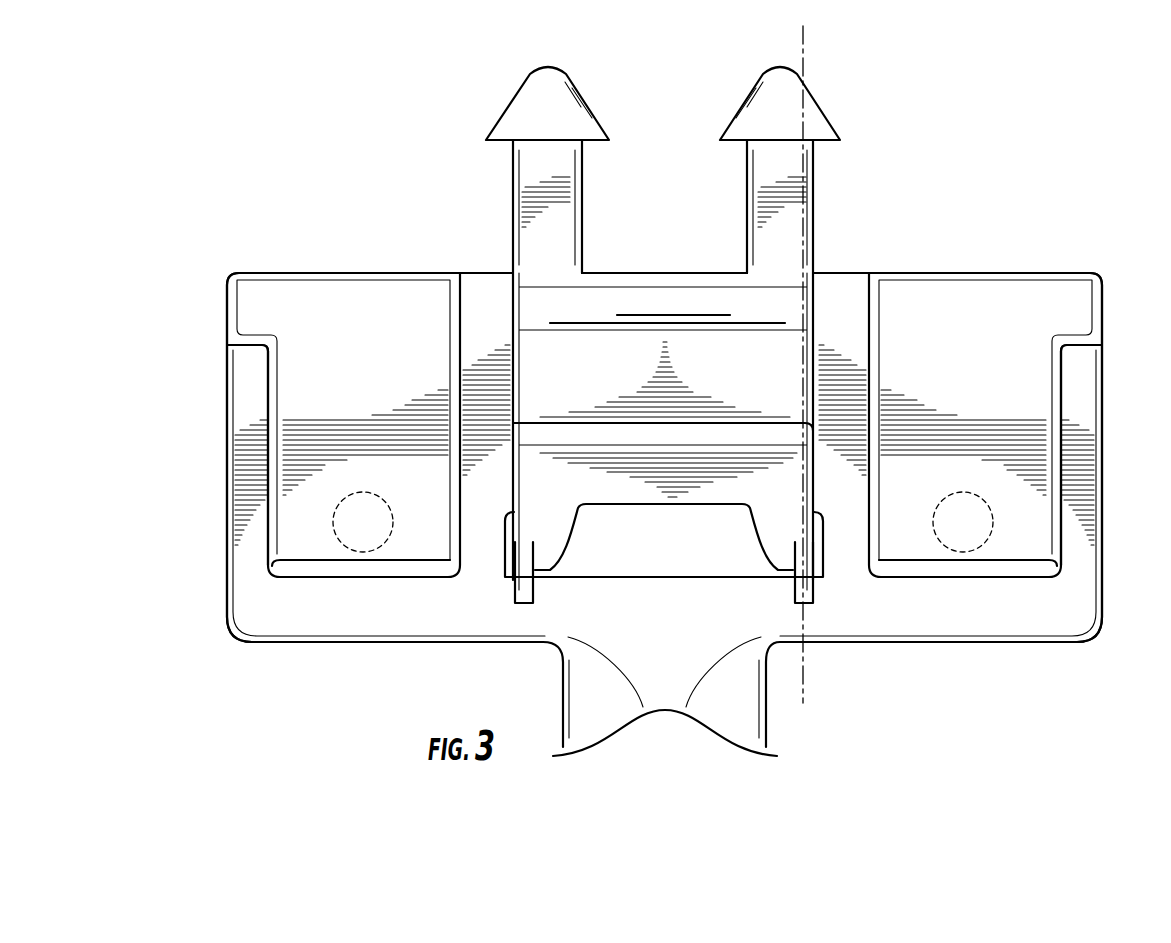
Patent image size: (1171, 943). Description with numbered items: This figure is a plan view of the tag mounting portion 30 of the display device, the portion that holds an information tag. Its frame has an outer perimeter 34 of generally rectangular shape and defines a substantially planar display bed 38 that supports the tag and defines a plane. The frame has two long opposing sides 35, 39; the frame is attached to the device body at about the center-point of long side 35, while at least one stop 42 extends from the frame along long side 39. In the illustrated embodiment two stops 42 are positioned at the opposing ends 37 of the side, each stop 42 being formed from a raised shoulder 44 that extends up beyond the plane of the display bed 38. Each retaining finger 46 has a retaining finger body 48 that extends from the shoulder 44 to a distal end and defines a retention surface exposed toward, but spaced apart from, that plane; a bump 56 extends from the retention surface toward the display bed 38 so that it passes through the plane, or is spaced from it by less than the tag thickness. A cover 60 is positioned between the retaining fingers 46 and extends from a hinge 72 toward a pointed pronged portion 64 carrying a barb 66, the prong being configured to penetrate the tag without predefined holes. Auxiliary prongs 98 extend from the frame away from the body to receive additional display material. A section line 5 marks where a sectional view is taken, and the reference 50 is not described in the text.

The section line 5- 5 is at (855, 703).
The tag mounting portion 30 is at (1130, 522).
The outer perimeter 34 is at (250, 592).
The long opposing side 35 is at (327, 643).
The opposing ends 37 is at (229, 273).
The display bed 38 is at (980, 628).
The long opposing side 39 is at (834, 272).
The stop 42 is at (243, 346).
The raised shoulder 44 is at (253, 306).
The retaining finger 46 is at (312, 398).
The retaining finger body 48 is at (352, 331).
The web 50 is at (474, 321).
The bump 56 is at (385, 499).
The cover 60 is at (627, 500).
The pronged portion 64 is at (757, 540).
The barb 66 is at (520, 592).
The hinge 72 is at (640, 297).
The auxiliary prongs 98 is at (565, 107).